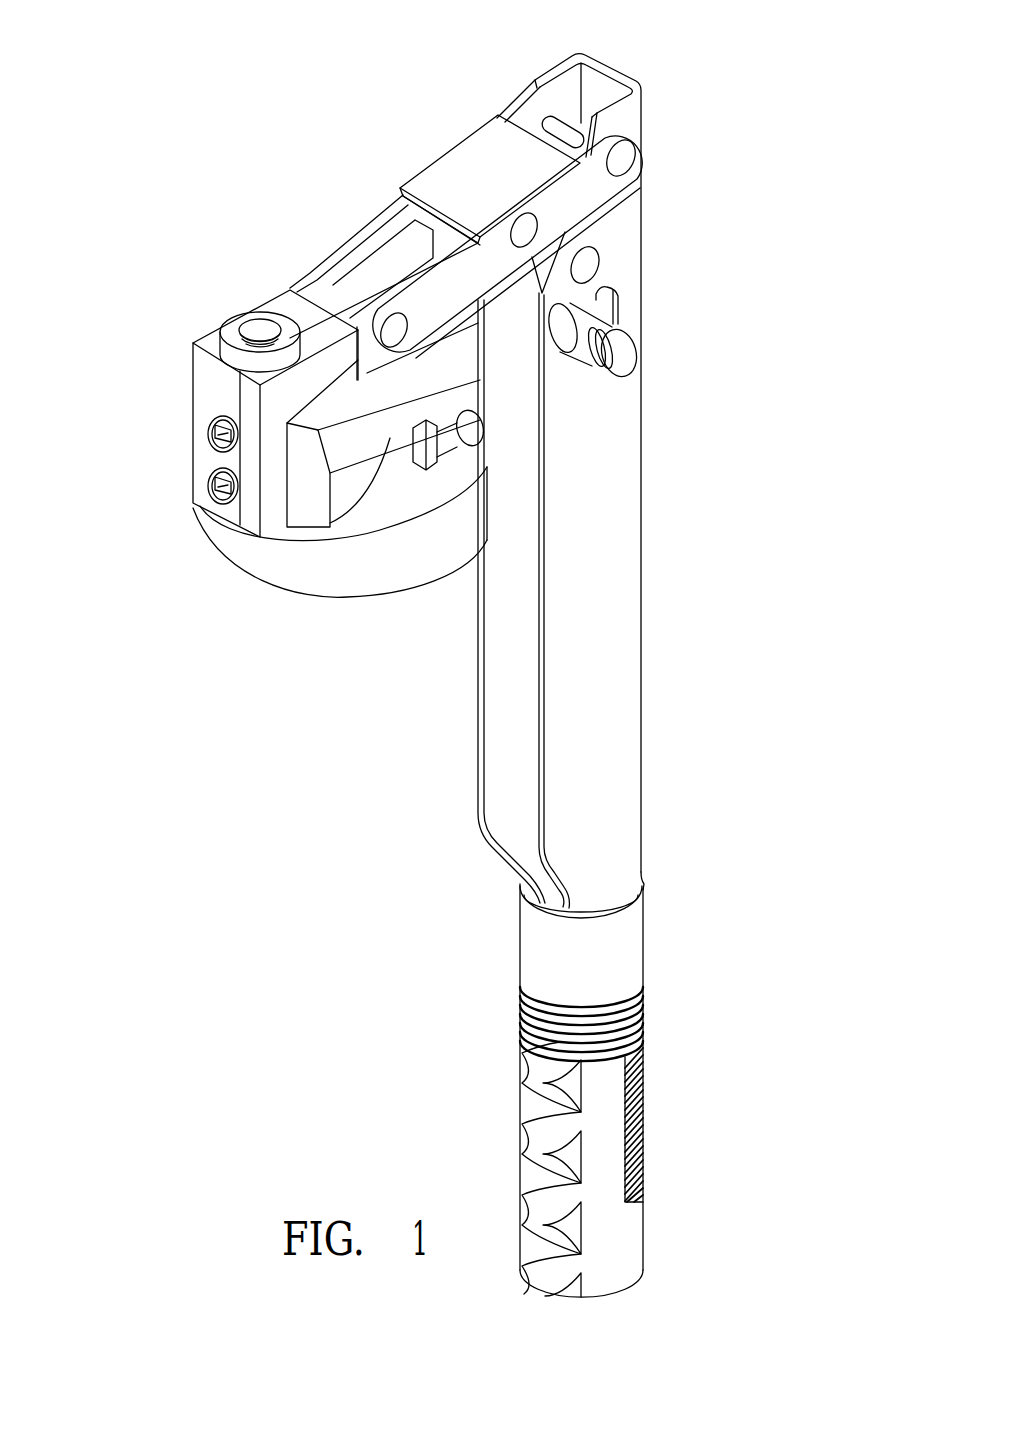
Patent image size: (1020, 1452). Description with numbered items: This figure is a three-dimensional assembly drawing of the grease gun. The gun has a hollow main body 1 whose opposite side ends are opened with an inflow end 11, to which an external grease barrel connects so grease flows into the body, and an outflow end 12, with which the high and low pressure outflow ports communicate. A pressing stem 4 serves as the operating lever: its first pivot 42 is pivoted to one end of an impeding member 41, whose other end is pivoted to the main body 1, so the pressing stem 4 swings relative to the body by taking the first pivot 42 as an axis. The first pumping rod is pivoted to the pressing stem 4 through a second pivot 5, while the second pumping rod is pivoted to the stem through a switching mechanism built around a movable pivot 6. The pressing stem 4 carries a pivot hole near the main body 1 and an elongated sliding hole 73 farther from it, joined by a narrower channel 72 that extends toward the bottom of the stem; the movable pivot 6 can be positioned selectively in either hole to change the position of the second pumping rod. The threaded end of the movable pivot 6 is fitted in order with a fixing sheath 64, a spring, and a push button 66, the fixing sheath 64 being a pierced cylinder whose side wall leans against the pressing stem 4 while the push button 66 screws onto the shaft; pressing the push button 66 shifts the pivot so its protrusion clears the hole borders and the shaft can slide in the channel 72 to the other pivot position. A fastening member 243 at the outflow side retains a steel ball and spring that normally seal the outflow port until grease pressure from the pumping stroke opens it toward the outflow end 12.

The main body 1 is at (160, 463).
The pressing stem 4 is at (628, 572).
The second pivot 5 is at (592, 263).
The movable pivot 6 is at (655, 368).
The inflow end 11 is at (340, 588).
The outflow end 12 is at (242, 318).
The impeding member 41 is at (448, 150).
The first pivot 42 is at (566, 132).
The fixing sheath 64 is at (572, 360).
The push button 66 is at (636, 380).
The channel 72 is at (612, 283).
The elongated sliding hole 73 is at (620, 300).
The fastening member 243 is at (210, 428).